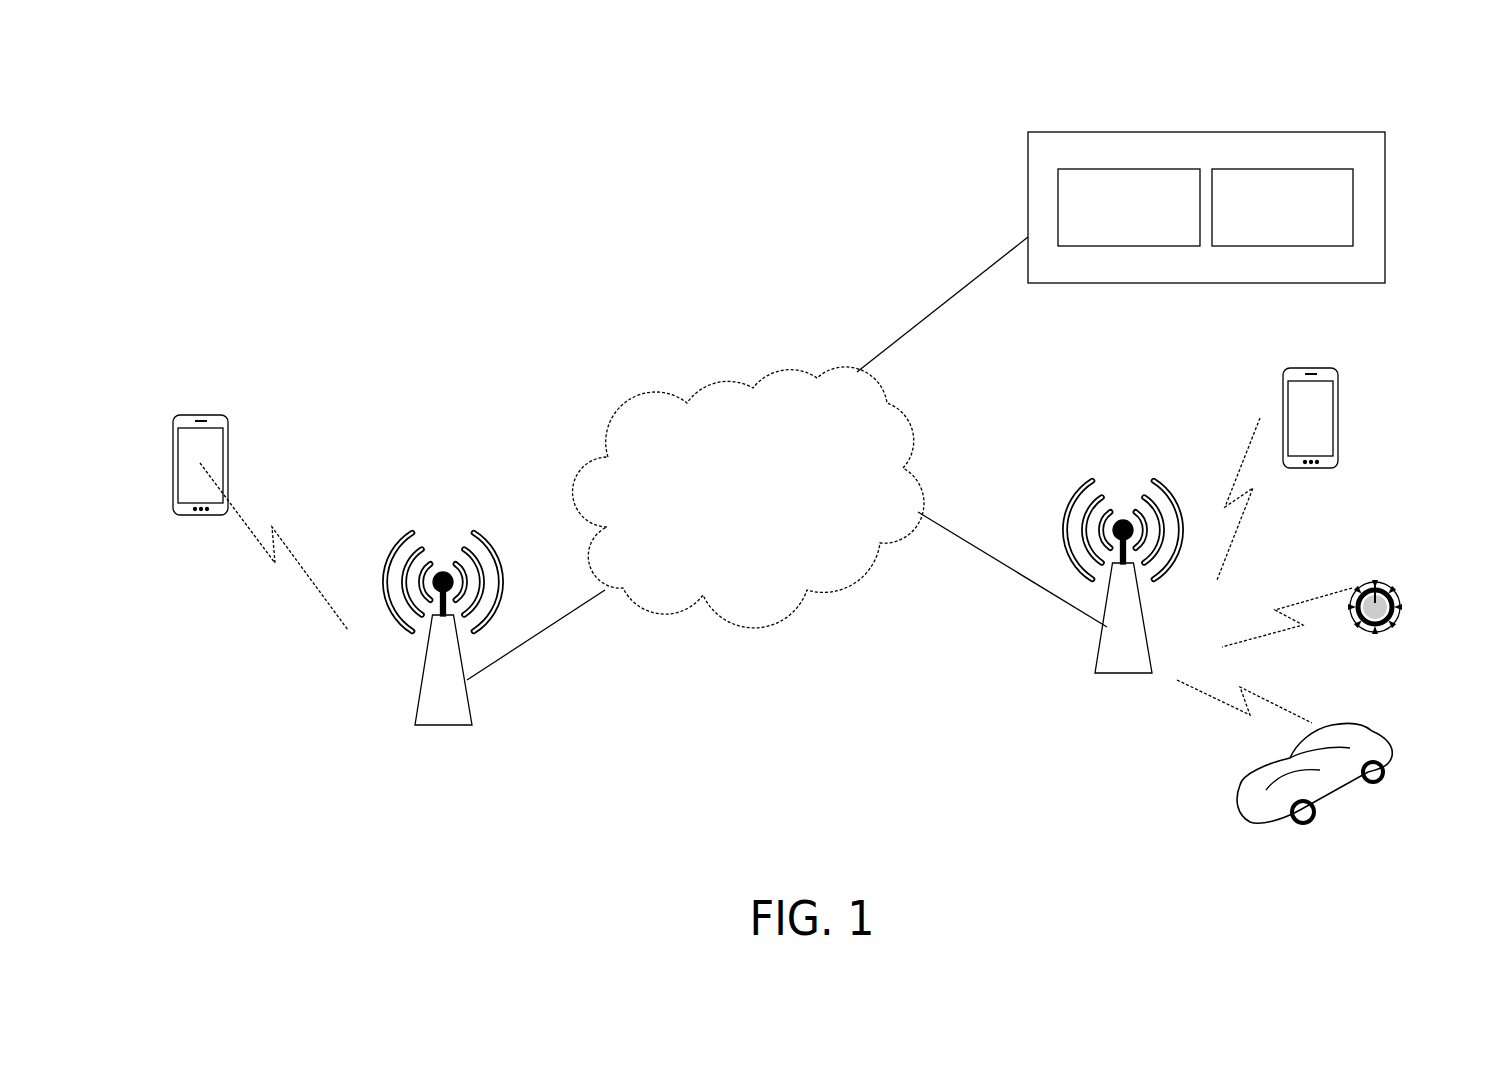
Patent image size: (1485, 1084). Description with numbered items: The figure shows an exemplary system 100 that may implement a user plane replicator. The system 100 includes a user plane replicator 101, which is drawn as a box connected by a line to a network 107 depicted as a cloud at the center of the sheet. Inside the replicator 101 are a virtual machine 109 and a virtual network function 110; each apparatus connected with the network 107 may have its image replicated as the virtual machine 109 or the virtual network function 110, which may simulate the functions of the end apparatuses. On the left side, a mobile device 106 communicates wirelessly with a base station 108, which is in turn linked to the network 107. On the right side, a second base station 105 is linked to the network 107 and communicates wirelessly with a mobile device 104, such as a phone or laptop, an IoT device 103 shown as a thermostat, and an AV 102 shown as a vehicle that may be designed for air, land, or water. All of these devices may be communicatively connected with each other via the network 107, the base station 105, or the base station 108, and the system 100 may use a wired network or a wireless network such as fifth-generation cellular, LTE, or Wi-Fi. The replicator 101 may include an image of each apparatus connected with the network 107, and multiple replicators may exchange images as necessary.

The system 100 is at (249, 118).
The user plane replicator 101 is at (1073, 131).
The AV 102 is at (1393, 738).
The IoT device 103 is at (1405, 592).
The mobile device 104 is at (1338, 398).
The base station 105 is at (1120, 676).
The mobile device 106 is at (208, 413).
The network 107 is at (762, 628).
The base station 108 is at (442, 728).
The virtual machine 109 is at (1129, 207).
The virtual network function 110 is at (1282, 207).